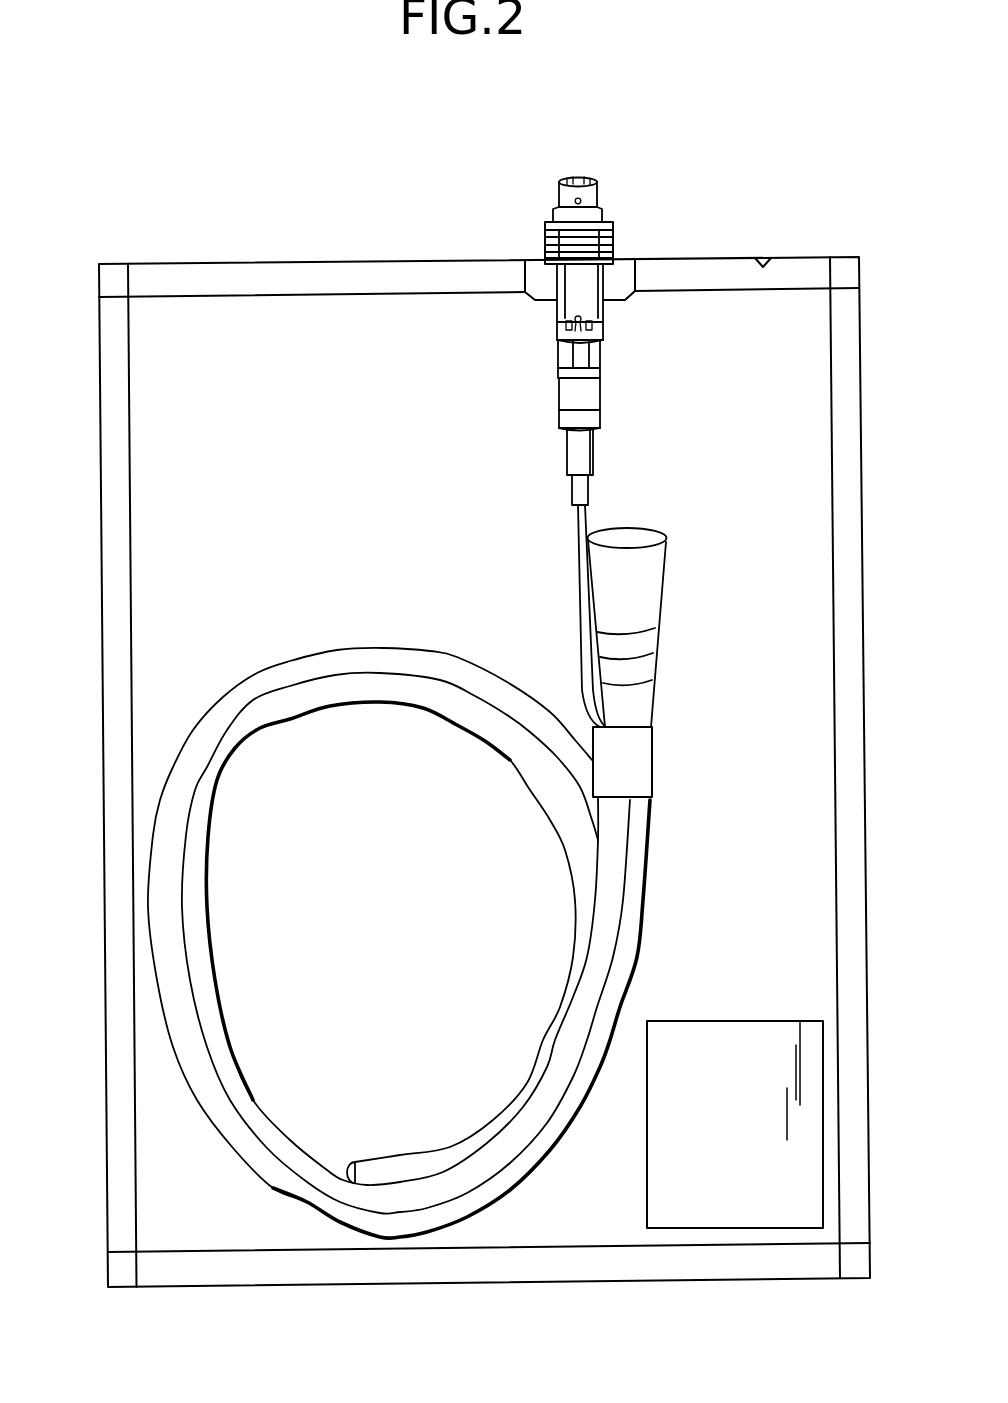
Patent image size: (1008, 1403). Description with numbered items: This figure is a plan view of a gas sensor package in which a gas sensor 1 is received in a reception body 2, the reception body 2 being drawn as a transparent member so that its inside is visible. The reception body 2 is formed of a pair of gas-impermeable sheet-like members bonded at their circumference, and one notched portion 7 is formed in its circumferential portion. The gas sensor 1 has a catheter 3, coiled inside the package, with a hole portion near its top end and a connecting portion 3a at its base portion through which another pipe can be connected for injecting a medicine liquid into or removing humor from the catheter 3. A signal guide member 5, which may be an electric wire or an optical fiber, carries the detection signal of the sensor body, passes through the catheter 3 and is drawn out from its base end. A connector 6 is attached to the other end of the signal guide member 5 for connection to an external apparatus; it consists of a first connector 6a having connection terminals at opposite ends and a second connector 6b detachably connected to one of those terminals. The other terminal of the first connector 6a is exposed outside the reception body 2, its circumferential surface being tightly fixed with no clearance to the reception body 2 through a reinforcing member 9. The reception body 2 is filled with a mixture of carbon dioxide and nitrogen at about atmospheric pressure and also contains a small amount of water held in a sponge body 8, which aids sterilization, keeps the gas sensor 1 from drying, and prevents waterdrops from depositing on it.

The gas sensor 1 is at (283, 645).
The reception body 2 is at (170, 263).
The catheter 3 is at (273, 1188).
The connecting portion 3a is at (667, 602).
The signal guide member 5 is at (577, 517).
The connector 6 is at (530, 320).
The first connector 6a is at (548, 218).
The second connector 6b is at (560, 402).
The notched portion 7 is at (783, 231).
The sponge body 8 is at (647, 1223).
The reinforcing member 9 is at (625, 262).